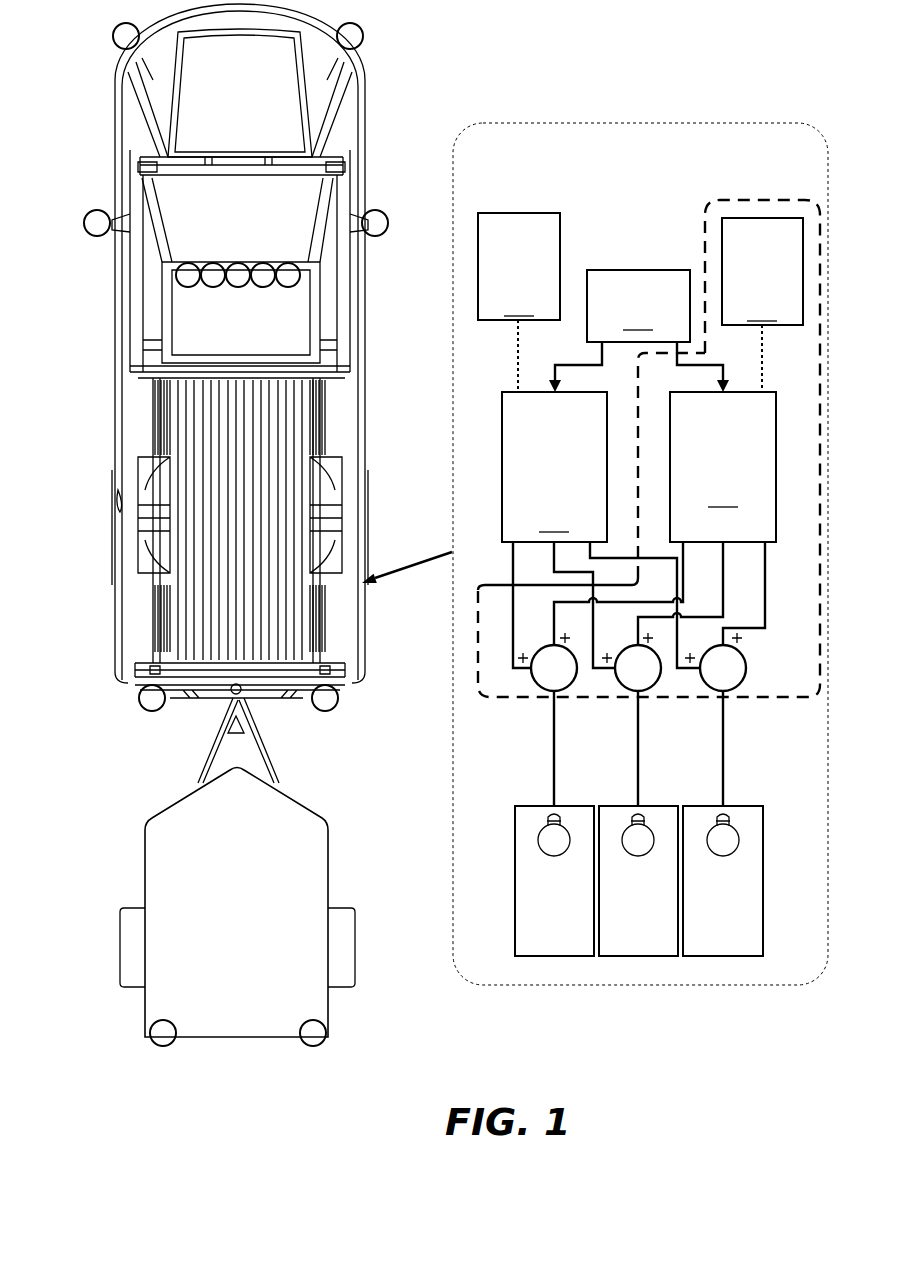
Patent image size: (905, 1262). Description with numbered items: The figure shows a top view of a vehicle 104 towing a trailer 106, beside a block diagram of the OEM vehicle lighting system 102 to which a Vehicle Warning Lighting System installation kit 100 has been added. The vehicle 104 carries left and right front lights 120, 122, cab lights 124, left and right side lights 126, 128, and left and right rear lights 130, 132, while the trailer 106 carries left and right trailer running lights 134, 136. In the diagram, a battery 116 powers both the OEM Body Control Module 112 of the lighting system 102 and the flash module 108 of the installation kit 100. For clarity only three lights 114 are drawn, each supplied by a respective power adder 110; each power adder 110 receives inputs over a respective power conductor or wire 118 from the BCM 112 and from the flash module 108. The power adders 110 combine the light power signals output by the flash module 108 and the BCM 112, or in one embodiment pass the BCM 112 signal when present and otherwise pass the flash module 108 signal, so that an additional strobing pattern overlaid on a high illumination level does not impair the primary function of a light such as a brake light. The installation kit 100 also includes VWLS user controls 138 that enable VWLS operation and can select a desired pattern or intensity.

The Vehicle Warning Lighting System (VWLS) installation kit 100 is at (750, 700).
The OEM vehicle lighting system 102 is at (642, 123).
The vehicle 104 is at (365, 122).
The trailer 106 is at (325, 820).
The flash module 108 is at (723, 467).
The power adders 110 is at (746, 666).
The OEM Body Control Module (BCM) 112 is at (554, 467).
The lights 114 is at (563, 806).
The battery 116 is at (639, 331).
The power conductor or wire 118 is at (765, 594).
The left front light 120 is at (113, 30).
The right front light 122 is at (363, 36).
The cab lights 124 is at (206, 288).
The left side light 126 is at (96, 210).
The right side light 128 is at (388, 214).
The left rear light 130 is at (152, 712).
The right rear light 132 is at (325, 712).
The left trailer running light 134 is at (163, 1046).
The right trailer running light 136 is at (313, 1046).
The VWLS user controls 138 is at (762, 305).